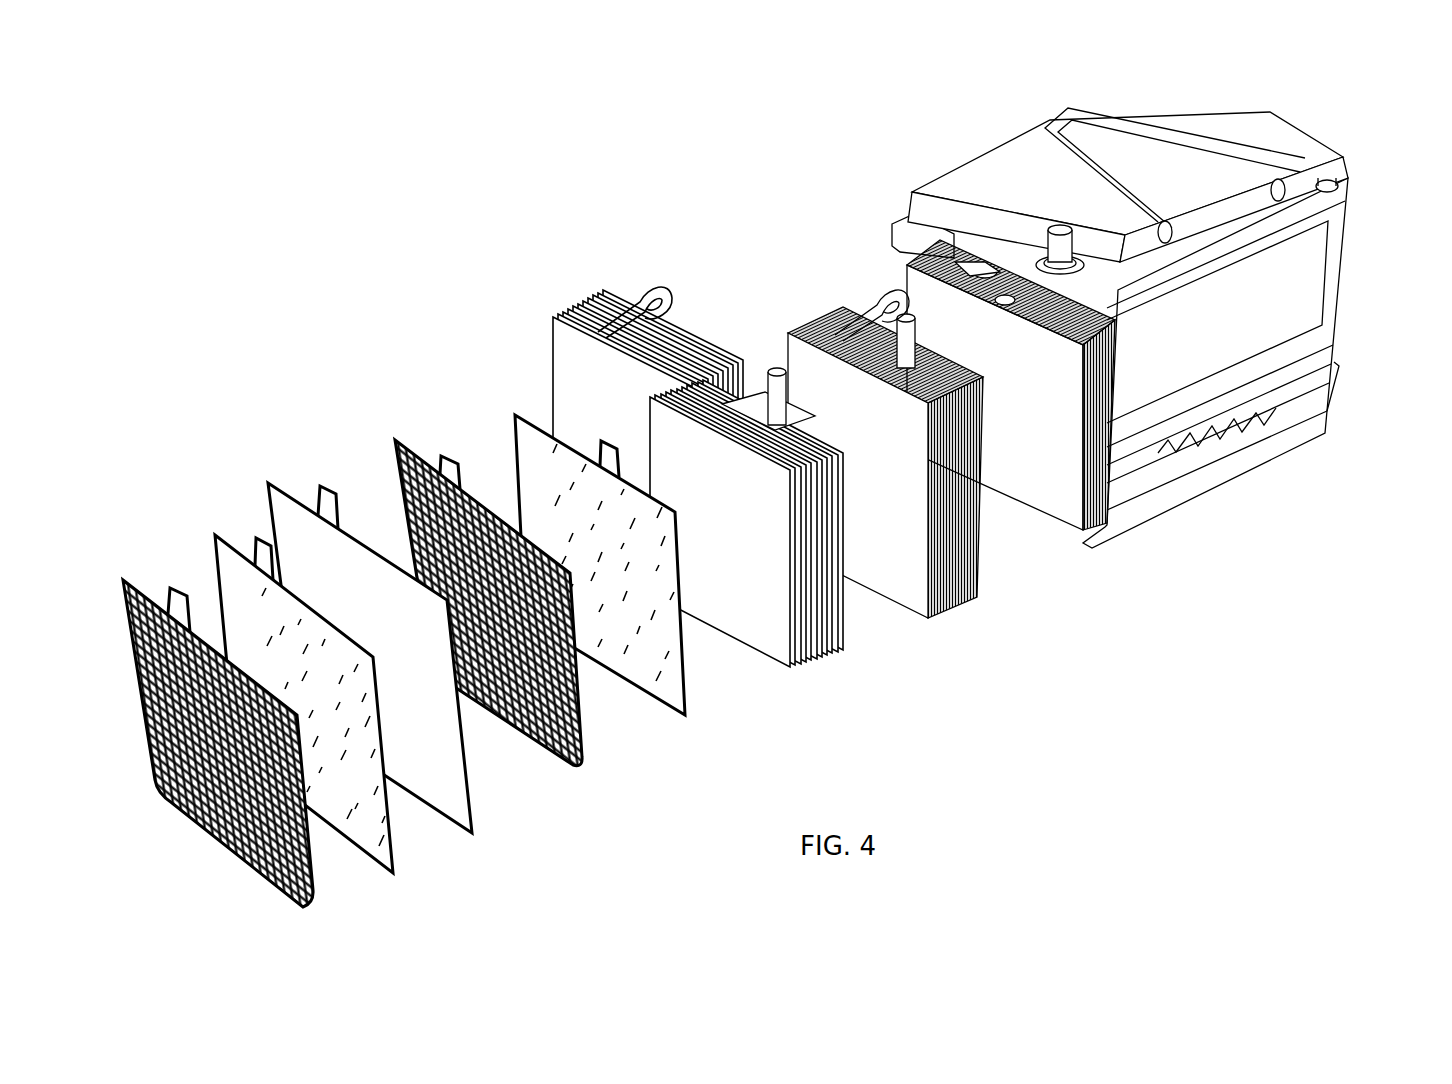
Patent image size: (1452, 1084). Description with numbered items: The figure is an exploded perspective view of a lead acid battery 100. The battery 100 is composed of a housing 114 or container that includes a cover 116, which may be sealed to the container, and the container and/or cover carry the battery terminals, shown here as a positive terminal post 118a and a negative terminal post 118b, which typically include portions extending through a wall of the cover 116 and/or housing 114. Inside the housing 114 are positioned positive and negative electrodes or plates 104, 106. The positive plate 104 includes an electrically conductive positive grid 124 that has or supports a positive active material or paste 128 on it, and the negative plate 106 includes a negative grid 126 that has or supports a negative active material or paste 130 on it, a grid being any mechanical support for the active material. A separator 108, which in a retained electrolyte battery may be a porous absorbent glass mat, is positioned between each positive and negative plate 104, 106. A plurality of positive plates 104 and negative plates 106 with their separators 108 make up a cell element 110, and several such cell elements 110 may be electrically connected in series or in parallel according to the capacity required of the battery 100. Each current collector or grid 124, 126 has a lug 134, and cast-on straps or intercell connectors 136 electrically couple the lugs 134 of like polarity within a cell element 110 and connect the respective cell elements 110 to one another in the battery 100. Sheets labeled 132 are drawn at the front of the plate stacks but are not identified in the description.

The lead acid battery 100 is at (531, 104).
The positive electrode or plate 104 is at (238, 589).
The negative electrode or plate 106 is at (529, 460).
The separator 108 is at (436, 790).
The cell element 110 is at (1075, 495).
The housing 114 is at (1300, 328).
The cover 116 is at (1195, 130).
The positive terminal post 118a is at (1050, 229).
The negative terminal post 118b is at (1340, 184).
The positive grid 124 is at (222, 840).
The negative grid 126 is at (458, 614).
The positive paste 128 is at (360, 820).
The negative paste 130 is at (660, 690).
The separator sheet 132 is at (567, 393).
The lug 134 is at (443, 452).
The cast-on strap or intercell connector 136 is at (615, 297).